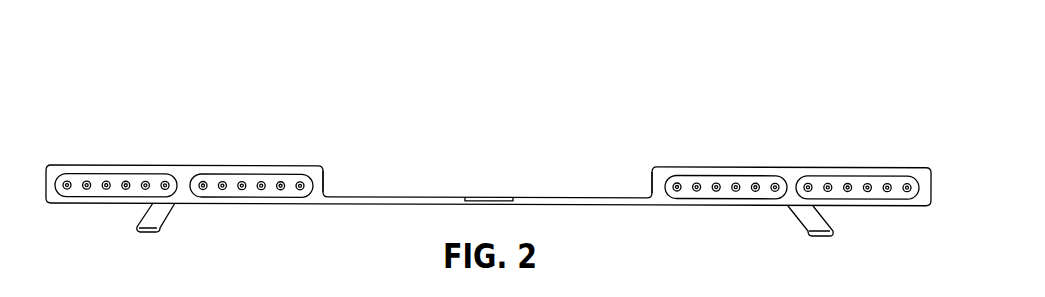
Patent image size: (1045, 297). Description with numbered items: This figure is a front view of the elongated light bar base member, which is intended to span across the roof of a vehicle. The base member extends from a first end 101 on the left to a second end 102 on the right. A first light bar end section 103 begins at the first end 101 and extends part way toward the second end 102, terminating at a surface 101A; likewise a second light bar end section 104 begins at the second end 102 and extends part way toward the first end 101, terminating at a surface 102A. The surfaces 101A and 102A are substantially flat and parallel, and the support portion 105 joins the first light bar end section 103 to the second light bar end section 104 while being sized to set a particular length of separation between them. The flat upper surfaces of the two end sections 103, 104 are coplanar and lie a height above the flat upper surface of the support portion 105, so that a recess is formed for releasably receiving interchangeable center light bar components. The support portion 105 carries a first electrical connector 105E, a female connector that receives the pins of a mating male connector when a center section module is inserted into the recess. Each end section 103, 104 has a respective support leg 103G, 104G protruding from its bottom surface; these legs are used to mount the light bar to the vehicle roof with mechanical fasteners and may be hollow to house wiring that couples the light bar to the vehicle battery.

The first end 101 is at (46, 160).
The surface 101A is at (323, 160).
The second end 102 is at (927, 162).
The surface 102A is at (653, 162).
The first light bar end section 103 is at (183, 173).
The support leg 103G is at (167, 216).
The second light bar end section 104 is at (792, 178).
The support leg 104G is at (806, 217).
The support portion 105 is at (573, 204).
The first electrical connector 105E is at (489, 199).